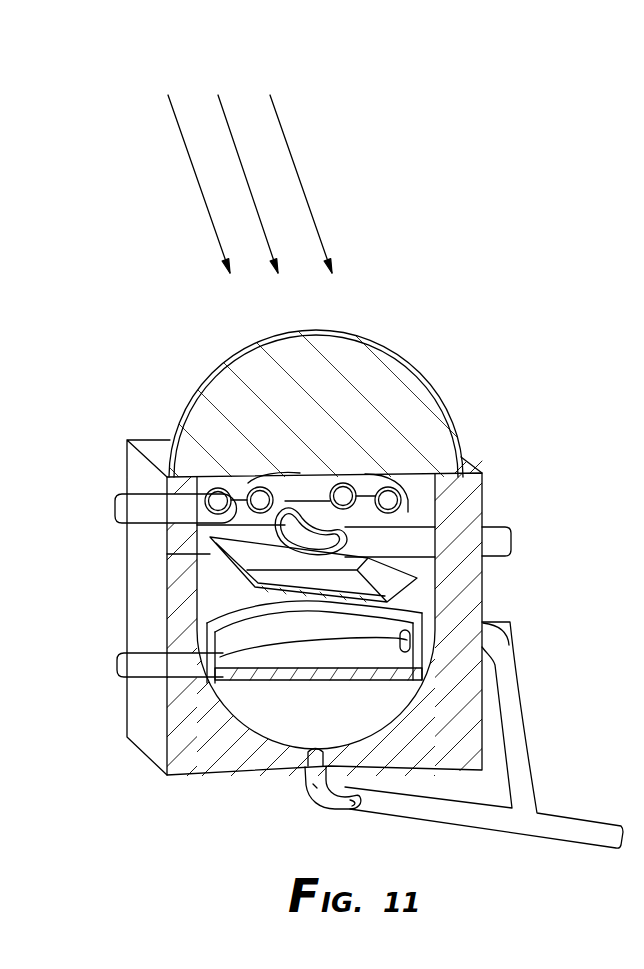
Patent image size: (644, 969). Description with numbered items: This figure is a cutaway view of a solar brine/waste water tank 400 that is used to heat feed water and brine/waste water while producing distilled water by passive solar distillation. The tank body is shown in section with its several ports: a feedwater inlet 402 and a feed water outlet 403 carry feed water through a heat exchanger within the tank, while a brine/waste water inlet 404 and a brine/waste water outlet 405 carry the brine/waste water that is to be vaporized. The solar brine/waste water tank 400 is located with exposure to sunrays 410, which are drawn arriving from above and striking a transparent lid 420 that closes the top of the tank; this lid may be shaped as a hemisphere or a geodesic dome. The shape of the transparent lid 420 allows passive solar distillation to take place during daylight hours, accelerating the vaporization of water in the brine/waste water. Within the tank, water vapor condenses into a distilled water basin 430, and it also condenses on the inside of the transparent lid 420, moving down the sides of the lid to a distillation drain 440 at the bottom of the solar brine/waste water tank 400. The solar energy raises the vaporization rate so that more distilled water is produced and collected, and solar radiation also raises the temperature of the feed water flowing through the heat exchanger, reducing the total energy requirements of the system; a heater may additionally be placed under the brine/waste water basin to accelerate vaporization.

The solar brine/waste water tank 400 is at (142, 753).
The feedwater inlet 402 is at (500, 527).
The feed water outlet 403 is at (117, 497).
The brine/waste water inlet 404 is at (510, 622).
The brine/waste water outlet 405 is at (137, 653).
The sunrays 410 is at (287, 145).
The transparent lid 420 is at (419, 363).
The distilled water basin 430 is at (200, 549).
The distillation drain 440 is at (298, 797).